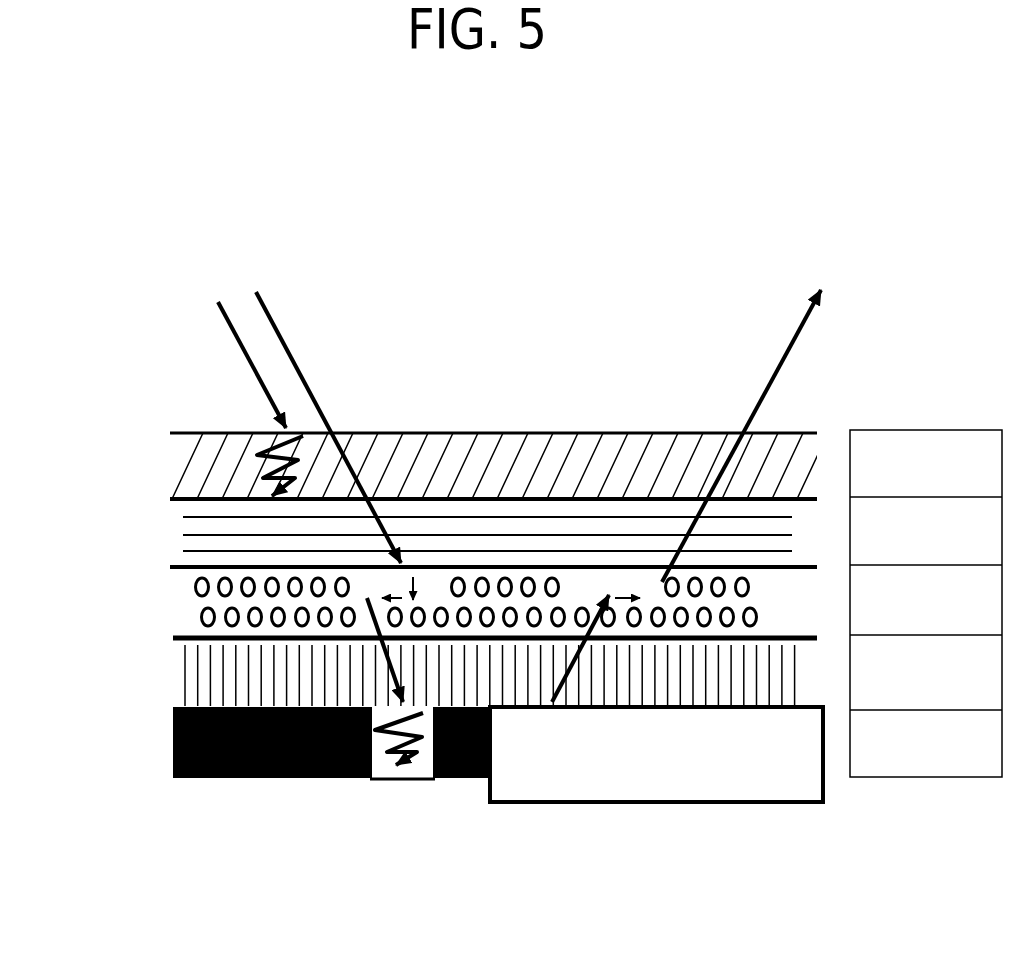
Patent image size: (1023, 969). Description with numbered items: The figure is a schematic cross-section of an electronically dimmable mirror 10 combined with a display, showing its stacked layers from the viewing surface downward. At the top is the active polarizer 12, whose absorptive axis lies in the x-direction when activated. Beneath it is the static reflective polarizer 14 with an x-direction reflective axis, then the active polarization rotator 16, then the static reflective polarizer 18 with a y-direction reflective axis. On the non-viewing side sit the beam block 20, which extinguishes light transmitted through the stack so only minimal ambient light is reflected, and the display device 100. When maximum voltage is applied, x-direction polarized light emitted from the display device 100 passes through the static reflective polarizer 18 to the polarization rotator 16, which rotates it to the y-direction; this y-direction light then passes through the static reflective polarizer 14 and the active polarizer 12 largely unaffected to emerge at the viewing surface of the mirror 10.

The first configuration assembly 10 is at (84, 356).
The active polarizer 12 is at (163, 472).
The static reflective polarizer 14 is at (163, 544).
The active polarization rotator 16 is at (163, 610).
The static reflective polarizer 18 is at (163, 680).
The beam block 20 is at (163, 749).
The display device 100 is at (760, 803).